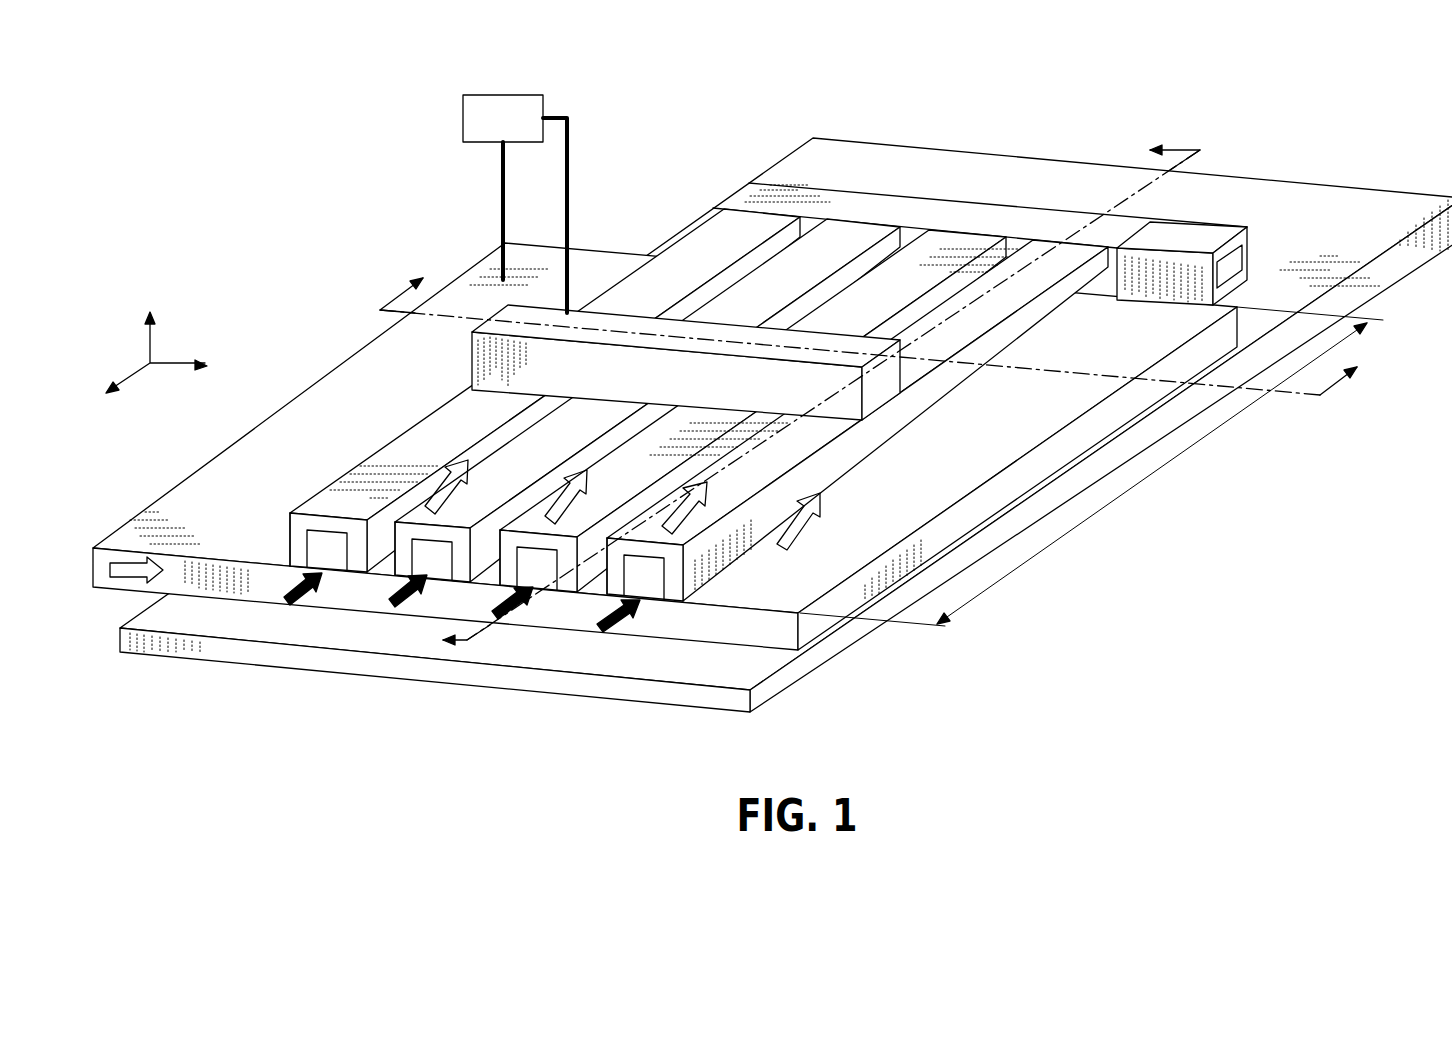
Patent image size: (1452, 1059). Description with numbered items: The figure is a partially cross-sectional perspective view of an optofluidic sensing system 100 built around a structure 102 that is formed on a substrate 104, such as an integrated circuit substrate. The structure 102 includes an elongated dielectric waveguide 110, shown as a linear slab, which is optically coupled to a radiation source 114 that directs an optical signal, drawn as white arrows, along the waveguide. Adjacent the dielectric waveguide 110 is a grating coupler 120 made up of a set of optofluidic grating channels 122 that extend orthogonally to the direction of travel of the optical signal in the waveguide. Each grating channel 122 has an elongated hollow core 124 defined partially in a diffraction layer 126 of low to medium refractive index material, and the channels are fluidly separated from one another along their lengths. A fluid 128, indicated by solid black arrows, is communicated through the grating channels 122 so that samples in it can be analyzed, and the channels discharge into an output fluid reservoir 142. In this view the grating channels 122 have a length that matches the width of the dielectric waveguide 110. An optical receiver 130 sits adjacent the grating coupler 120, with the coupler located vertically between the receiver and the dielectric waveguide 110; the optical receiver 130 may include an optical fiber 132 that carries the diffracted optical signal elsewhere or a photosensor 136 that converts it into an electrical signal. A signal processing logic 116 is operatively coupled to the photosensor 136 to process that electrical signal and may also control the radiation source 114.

The optofluidic sensing system 100 is at (767, 443).
The structure 102 is at (767, 443).
The substrate 104 is at (768, 676).
The dielectric waveguide 110 is at (240, 527).
The radiation source 114 is at (148, 528).
The signal processing logic 116 is at (481, 134).
The grating coupler 120 is at (372, 438).
The optofluidic grating channels 122 is at (357, 565).
The hollow core 124 is at (329, 562).
The diffraction layer 126 is at (293, 538).
The fluid 128 is at (322, 568).
The optical receiver 130 is at (761, 258).
The optical fiber 132 is at (761, 258).
The photosensor 136 is at (735, 325).
The output fluid reservoir 142 is at (1247, 258).